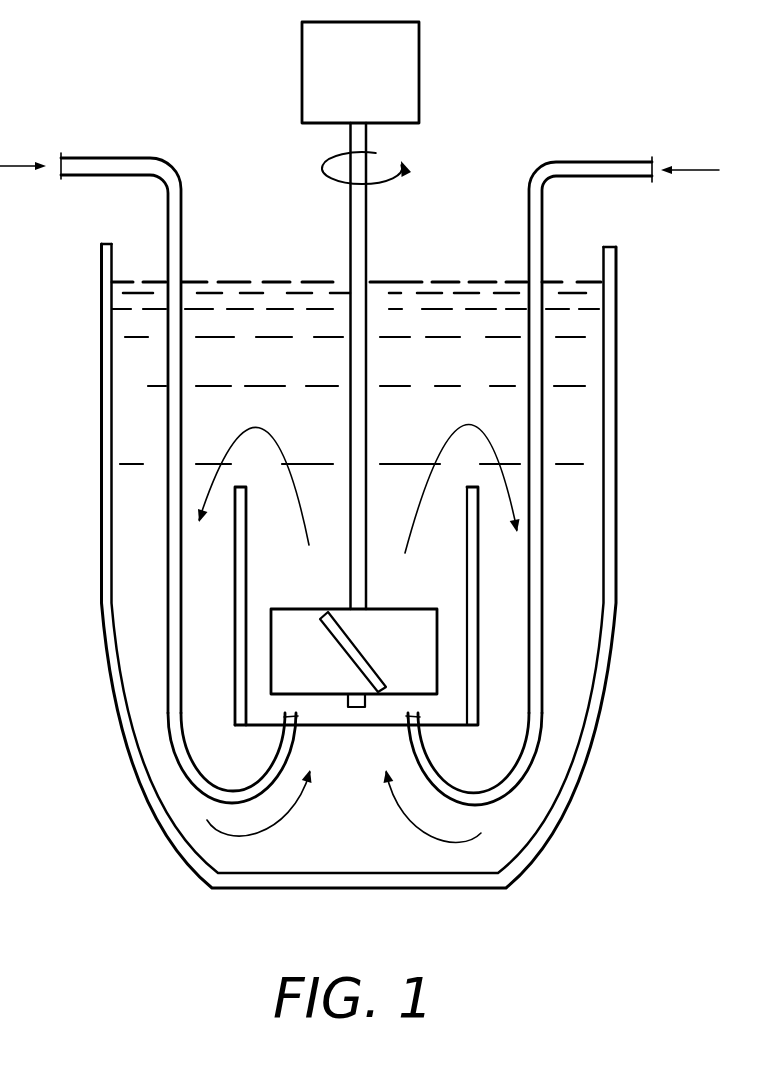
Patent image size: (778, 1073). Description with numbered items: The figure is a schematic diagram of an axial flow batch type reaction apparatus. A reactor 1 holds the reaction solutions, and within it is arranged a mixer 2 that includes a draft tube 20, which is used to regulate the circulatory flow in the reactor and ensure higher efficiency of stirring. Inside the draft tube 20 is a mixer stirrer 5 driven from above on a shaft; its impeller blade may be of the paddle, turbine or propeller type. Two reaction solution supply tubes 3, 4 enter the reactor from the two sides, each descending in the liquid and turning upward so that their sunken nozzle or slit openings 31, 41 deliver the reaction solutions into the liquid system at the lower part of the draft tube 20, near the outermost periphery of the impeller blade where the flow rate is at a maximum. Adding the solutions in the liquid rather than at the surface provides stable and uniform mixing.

The reactor 1 is at (616, 370).
The mixer 2 is at (285, 606).
The draft tube 20 is at (233, 582).
The reaction solution supply tube 3 is at (179, 454).
The sunken nozzle or slit opening 31 is at (259, 712).
The reaction solution supply tube 4 is at (529, 457).
The sunken nozzle or slit opening 41 is at (442, 713).
The mixer stirrer 5 is at (414, 650).